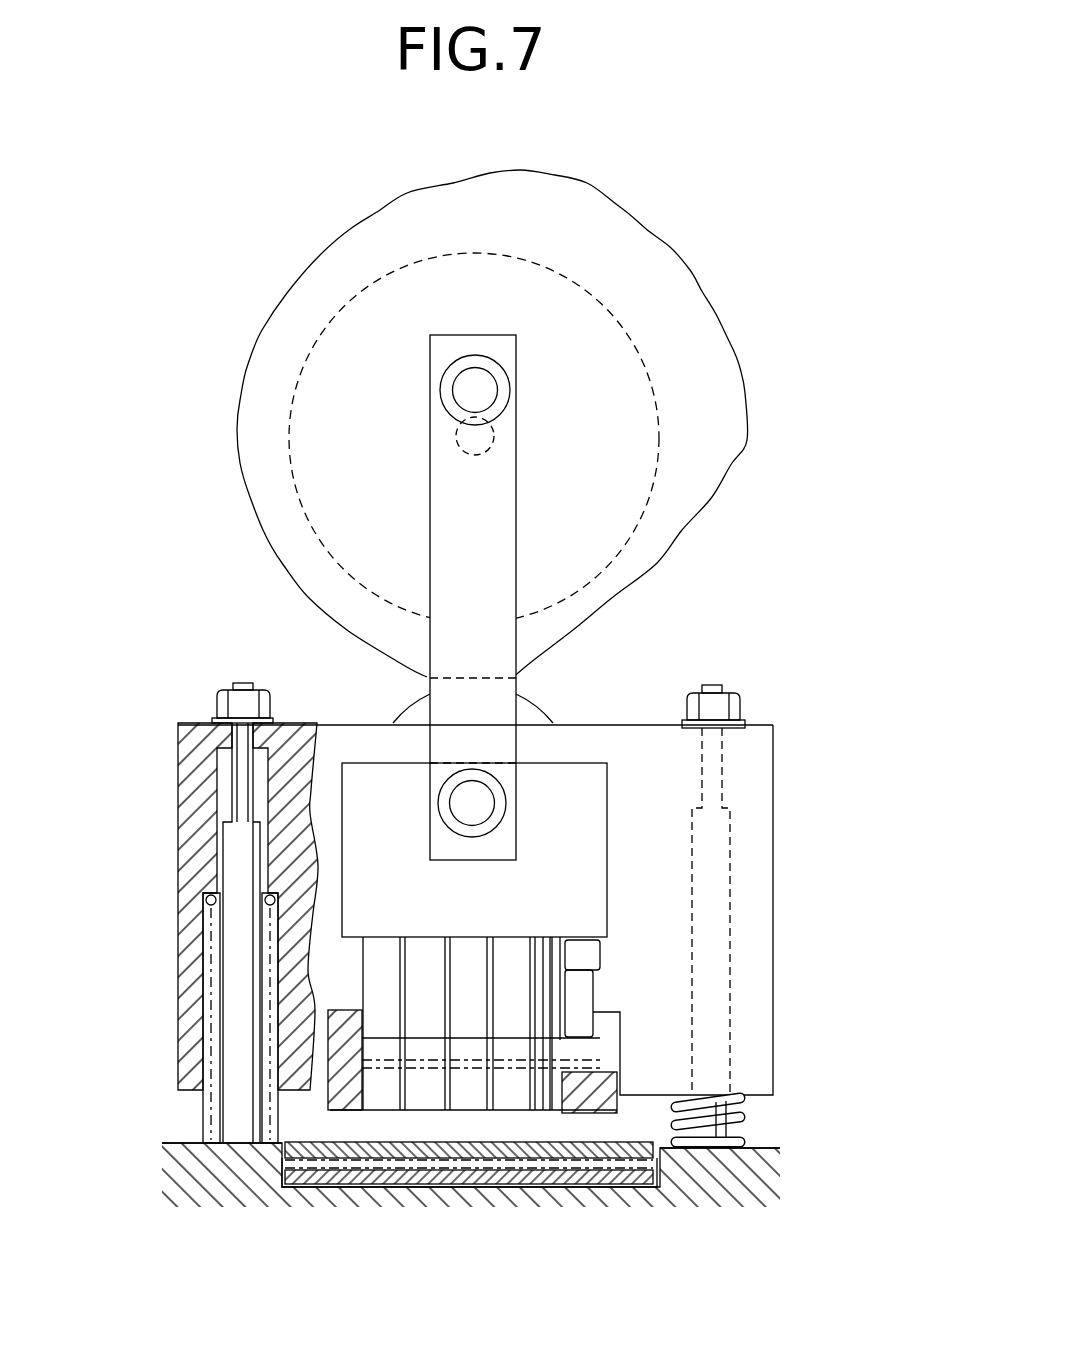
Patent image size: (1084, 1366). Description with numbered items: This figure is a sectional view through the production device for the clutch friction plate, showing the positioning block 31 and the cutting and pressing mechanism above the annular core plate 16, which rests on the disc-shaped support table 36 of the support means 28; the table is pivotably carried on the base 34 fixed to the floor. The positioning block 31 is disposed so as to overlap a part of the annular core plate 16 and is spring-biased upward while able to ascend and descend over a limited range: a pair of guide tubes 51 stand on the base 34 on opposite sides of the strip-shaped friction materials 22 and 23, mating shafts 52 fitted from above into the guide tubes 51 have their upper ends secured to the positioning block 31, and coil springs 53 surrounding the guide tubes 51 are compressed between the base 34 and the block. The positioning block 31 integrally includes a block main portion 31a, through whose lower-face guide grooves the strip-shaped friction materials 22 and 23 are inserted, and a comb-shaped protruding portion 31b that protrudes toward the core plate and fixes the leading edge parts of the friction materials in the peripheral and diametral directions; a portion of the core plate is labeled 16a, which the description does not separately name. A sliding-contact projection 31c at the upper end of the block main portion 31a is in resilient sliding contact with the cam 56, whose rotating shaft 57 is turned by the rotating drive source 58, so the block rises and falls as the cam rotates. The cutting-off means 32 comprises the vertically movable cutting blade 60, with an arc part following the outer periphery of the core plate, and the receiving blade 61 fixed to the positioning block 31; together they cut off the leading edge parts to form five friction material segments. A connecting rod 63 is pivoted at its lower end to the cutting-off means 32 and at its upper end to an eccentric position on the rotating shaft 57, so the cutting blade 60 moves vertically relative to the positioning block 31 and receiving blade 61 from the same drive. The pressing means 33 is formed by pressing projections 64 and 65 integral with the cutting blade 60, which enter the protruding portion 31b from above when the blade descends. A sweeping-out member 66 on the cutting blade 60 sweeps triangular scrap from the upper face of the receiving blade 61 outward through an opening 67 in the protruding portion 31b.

The annular core plate 16 is at (298, 1163).
The base upper surface 16a is at (232, 1146).
The strip-shaped friction material 22 is at (550, 1110).
The strip-shaped friction material 23 is at (385, 1065).
The support means 28 is at (624, 1141).
The positioning block 31 is at (773, 837).
The block main portion 31a is at (628, 723).
The protruding portion 31b is at (348, 1104).
The sliding-contact projection 31c is at (405, 707).
The cutting-off means 32 is at (612, 930).
The pressing means 33 is at (354, 984).
The base 34 is at (762, 1152).
The support table 36 is at (653, 1180).
The guide tube 51 is at (233, 867).
The mating shaft 52 is at (237, 775).
The coil spring 53 is at (208, 1140).
The cam 56 is at (255, 367).
The rotating shaft 57 is at (485, 458).
The rotating drive source 58 is at (578, 282).
The cutting blade 60 is at (580, 886).
The receiving blade 61 is at (583, 1102).
The connecting rod 63 is at (453, 545).
The pressing projection 64 is at (543, 948).
The pressing projection 65 is at (512, 945).
The sweeping-out member 66 is at (583, 980).
The opening 67 is at (598, 1027).